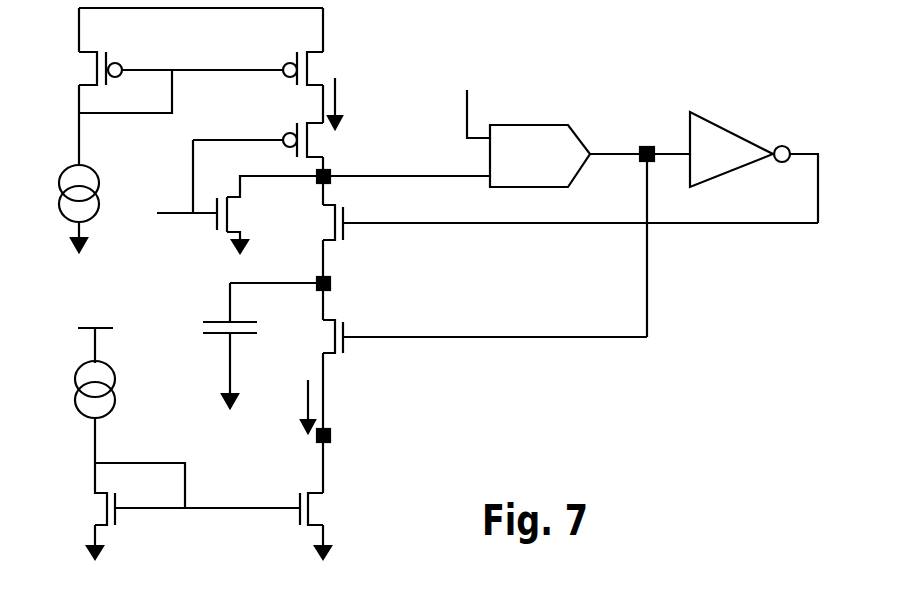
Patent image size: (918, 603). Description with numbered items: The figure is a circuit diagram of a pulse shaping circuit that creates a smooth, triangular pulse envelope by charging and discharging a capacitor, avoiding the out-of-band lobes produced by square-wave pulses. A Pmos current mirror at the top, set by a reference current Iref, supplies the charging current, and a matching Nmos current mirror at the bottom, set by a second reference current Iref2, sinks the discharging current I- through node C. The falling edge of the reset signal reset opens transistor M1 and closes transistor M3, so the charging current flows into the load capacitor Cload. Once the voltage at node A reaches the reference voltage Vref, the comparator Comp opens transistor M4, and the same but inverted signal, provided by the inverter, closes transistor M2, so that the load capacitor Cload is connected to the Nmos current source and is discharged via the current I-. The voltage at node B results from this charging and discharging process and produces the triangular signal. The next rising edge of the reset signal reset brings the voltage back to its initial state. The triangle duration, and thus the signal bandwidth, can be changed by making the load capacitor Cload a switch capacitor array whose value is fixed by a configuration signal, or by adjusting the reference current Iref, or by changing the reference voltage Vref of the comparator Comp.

The transistor M1 is at (311, 146).
The transistor M2 is at (558, 222).
The transistor M3 is at (267, 214).
The transistor M4 is at (472, 336).
The reference current Iref is at (52, 165).
The reference current Iref2 is at (67, 363).
The I− current I- is at (301, 406).
The reset signal reset is at (176, 227).
The node A is at (403, 187).
The node B is at (289, 292).
The node C is at (336, 445).
The load capacitor Cload is at (209, 345).
The reference voltage Vref is at (478, 101).
The comparator Comp is at (540, 156).